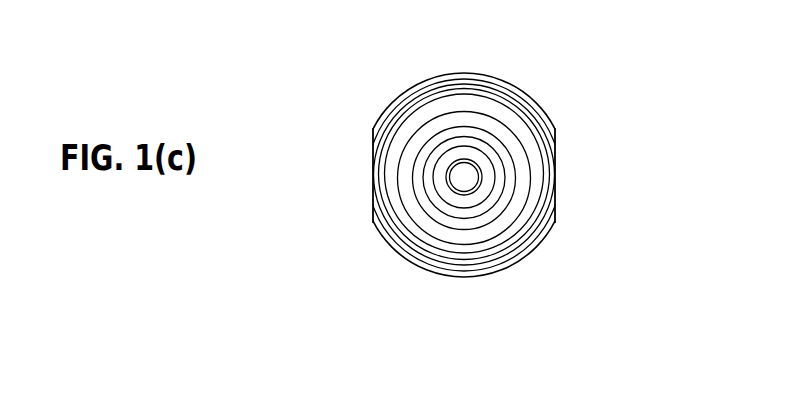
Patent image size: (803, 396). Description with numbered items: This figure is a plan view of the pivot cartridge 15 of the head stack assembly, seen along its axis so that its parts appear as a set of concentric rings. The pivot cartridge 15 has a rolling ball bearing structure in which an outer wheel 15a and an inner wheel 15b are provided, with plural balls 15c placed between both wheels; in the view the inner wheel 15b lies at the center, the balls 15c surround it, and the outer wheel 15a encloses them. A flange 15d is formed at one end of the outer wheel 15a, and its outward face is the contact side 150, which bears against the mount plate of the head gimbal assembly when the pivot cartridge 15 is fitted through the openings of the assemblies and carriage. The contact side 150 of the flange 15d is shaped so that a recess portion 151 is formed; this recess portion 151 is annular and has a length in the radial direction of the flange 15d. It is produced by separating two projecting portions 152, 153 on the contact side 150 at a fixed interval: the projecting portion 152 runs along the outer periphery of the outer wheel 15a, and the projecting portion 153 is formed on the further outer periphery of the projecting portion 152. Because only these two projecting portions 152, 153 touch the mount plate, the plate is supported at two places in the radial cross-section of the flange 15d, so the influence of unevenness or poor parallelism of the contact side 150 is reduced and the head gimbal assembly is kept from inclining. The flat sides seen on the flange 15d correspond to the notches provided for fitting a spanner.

The pivot cartridge 15 is at (494, 67).
The contact side 150 is at (553, 128).
The recess portion 151 is at (416, 92).
The projecting portion 152 is at (518, 108).
The projecting portion 153 is at (382, 117).
The outer wheel 15a is at (388, 180).
The inner wheel 15b is at (430, 168).
The balls 15c is at (505, 177).
The flange 15d is at (539, 242).